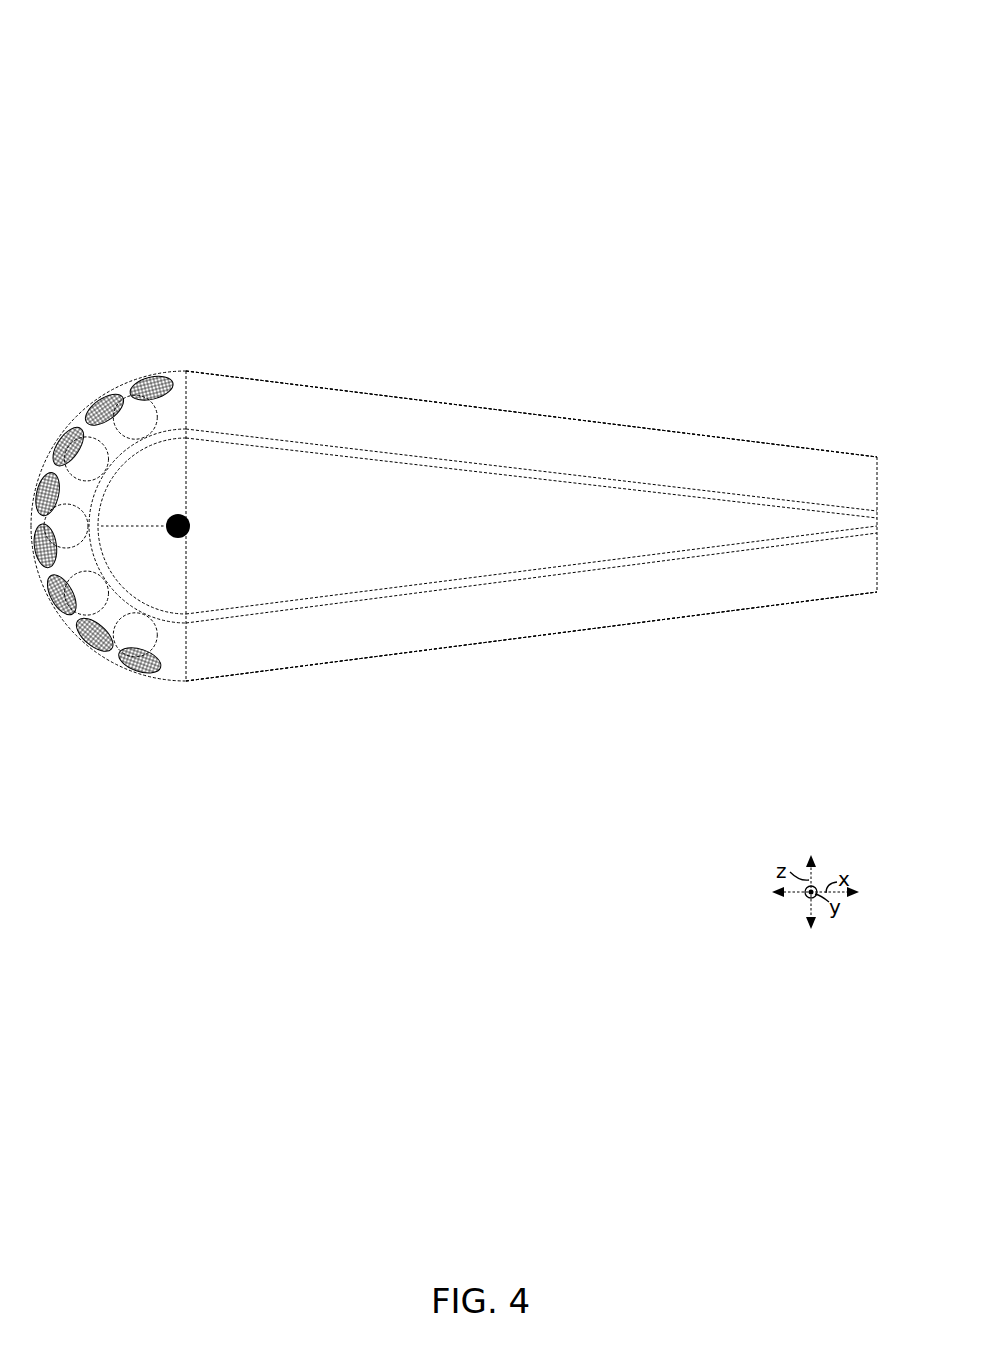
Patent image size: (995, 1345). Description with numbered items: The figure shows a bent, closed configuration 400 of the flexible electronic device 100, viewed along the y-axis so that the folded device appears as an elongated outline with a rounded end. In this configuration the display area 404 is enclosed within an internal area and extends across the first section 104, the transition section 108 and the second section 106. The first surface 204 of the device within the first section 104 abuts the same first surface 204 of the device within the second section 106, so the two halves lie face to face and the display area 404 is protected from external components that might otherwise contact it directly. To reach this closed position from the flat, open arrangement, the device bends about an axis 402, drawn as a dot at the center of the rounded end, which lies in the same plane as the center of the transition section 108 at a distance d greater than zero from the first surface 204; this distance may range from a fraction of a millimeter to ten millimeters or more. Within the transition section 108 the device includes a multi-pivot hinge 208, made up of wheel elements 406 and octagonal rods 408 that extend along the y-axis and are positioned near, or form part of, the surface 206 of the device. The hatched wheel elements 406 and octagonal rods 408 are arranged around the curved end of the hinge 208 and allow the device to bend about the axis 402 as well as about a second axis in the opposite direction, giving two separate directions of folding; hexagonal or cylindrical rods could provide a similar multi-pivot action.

The flexible electronic device 100 is at (801, 470).
The first section 104 is at (442, 388).
The second section 106 is at (392, 668).
The transition section 108 is at (101, 668).
The first surface 204 is at (405, 586).
The surface 206 is at (666, 432).
The multi-pivot hinge 208 is at (50, 455).
The closed configuration 400 is at (236, 42).
The axis 402 is at (171, 517).
The display area 404 is at (315, 607).
The wheel elements 406 is at (140, 418).
The octagonal rods 408 is at (52, 601).